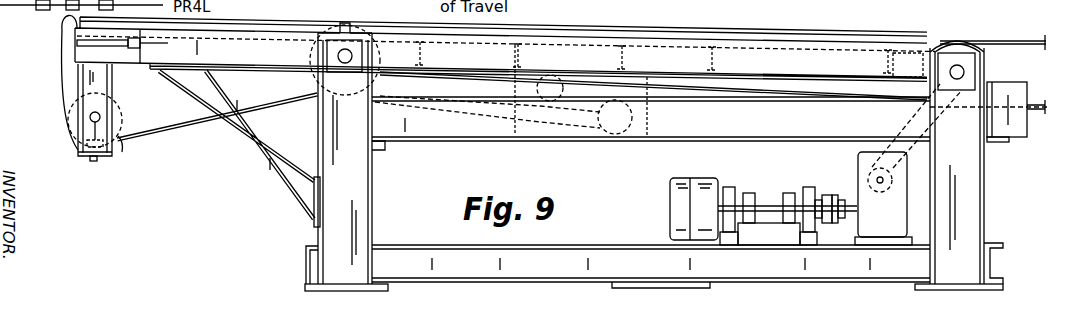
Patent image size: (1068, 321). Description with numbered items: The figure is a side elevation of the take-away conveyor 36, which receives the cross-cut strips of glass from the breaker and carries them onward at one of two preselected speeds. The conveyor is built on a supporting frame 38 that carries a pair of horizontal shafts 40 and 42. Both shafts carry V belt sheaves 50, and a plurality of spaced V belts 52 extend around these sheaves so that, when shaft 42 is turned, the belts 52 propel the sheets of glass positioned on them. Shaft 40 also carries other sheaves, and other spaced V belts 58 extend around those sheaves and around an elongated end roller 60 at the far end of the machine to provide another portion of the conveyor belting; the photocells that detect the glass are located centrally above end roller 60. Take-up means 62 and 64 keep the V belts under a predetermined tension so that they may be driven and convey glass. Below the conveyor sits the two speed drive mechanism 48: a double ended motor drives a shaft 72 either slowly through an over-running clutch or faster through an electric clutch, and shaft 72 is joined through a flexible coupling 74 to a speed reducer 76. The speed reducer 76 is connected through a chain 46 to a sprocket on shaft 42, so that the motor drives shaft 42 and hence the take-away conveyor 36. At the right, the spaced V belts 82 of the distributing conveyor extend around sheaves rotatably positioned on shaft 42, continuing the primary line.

The take-away conveyor 36 is at (778, 21).
The supporting frame 38 is at (364, 188).
The horizontal shaft 40 is at (346, 52).
The horizontal shaft 42 is at (958, 68).
The chain 46 is at (930, 115).
The two speed drive mechanism 48 is at (751, 173).
The V belt sheaves 50 is at (340, 22).
The V belts 52 is at (470, 108).
The V belts 58 is at (167, 131).
The end roller 60 is at (70, 31).
The take-up means 62 is at (648, 122).
The take-up means 64 is at (117, 146).
The shaft 72 is at (775, 207).
The flexible coupling 74 is at (832, 197).
The speed reducer 76 is at (858, 163).
The V belts 82 is at (1019, 40).